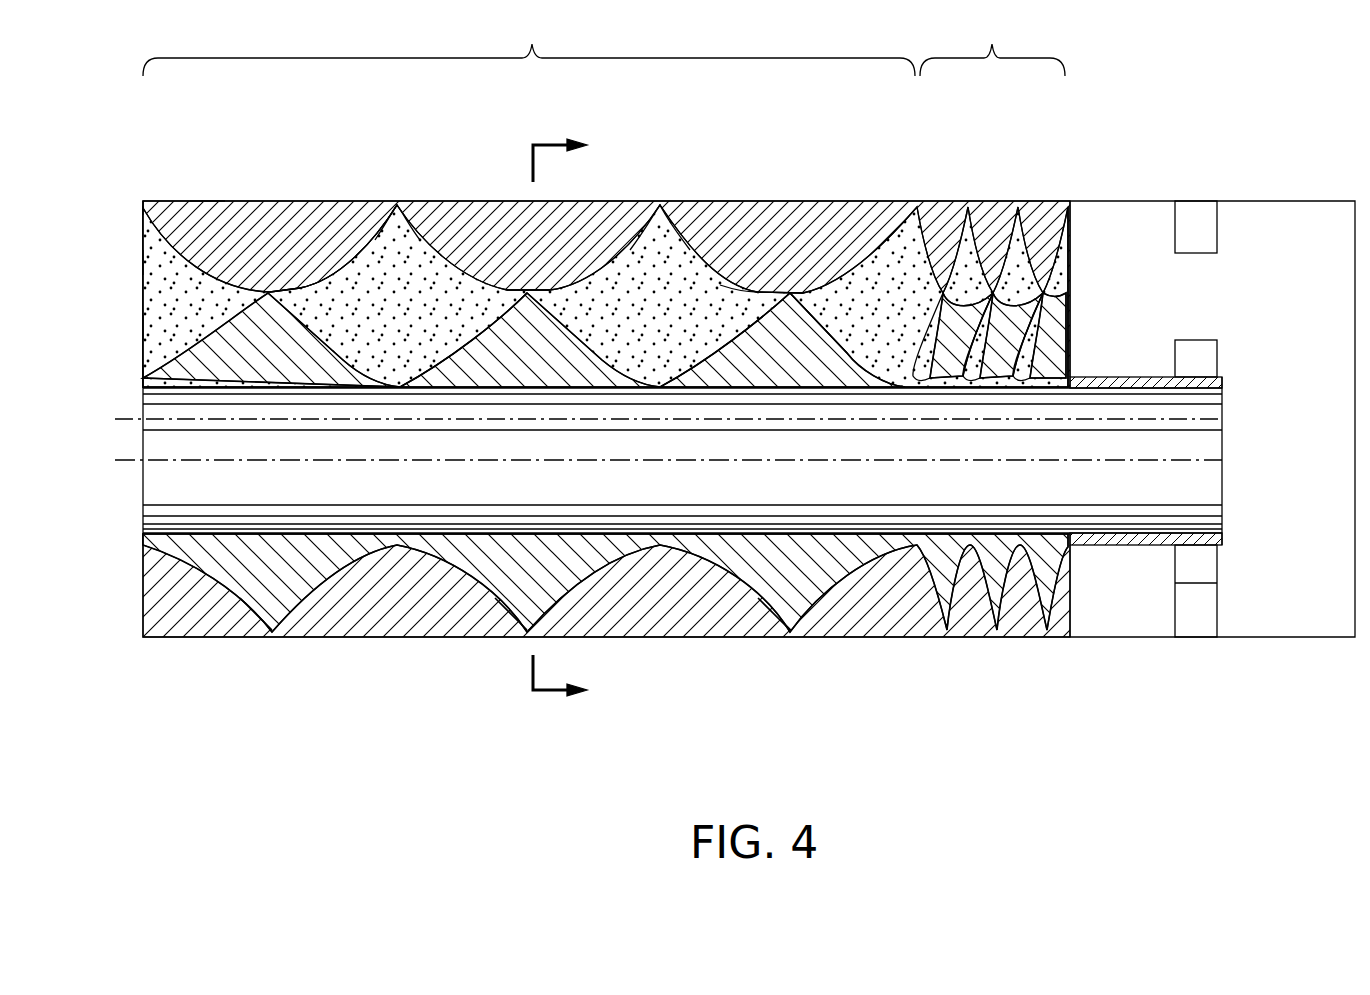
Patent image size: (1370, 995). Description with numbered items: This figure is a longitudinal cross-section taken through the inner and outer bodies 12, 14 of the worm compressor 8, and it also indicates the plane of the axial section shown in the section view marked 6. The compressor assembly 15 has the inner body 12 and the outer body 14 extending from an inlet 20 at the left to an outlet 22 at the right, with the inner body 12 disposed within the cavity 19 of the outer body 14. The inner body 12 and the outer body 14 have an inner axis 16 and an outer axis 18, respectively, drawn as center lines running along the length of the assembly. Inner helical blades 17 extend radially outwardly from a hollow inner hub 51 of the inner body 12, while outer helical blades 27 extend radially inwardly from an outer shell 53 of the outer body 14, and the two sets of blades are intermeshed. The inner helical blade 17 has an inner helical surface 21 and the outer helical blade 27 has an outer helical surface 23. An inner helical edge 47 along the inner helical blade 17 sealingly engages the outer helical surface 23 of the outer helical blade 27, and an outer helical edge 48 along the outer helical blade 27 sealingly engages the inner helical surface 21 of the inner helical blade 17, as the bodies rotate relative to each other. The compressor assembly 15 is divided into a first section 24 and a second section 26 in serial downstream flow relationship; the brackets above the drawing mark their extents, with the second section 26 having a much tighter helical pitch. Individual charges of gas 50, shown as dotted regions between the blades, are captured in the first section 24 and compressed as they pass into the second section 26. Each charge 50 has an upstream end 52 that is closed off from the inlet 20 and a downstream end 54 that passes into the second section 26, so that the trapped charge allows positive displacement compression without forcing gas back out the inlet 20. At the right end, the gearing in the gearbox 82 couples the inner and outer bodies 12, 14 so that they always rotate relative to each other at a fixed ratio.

The worm compressor 8 is at (155, 694).
The inner body 12 is at (273, 607).
The outer body 14 is at (258, 203).
The compressor assembly 15 is at (143, 262).
The inner axis 16 is at (1145, 465).
The inner helical blade 17 is at (507, 300).
The outer axis 18 is at (1145, 420).
The cavity 19 is at (403, 207).
The inlet 20 is at (143, 328).
The inner helical surface 21 is at (463, 340).
The outlet 22 is at (1070, 276).
The outer helical surface 23 is at (662, 246).
The first section 24 is at (529, 43).
The second section 26 is at (992, 43).
The outer helical blade 27 is at (207, 208).
The inner helical edge 47 is at (328, 300).
The outer helical edge 48 is at (865, 287).
The charge of gas 50 is at (393, 347).
The hollow inner hub 51 is at (143, 378).
The upstream end 52 is at (287, 297).
The outer shell 53 is at (143, 201).
The downstream end 54 is at (757, 293).
The gearbox 82 is at (1196, 640).
The section line 6- 6 is at (581, 421).